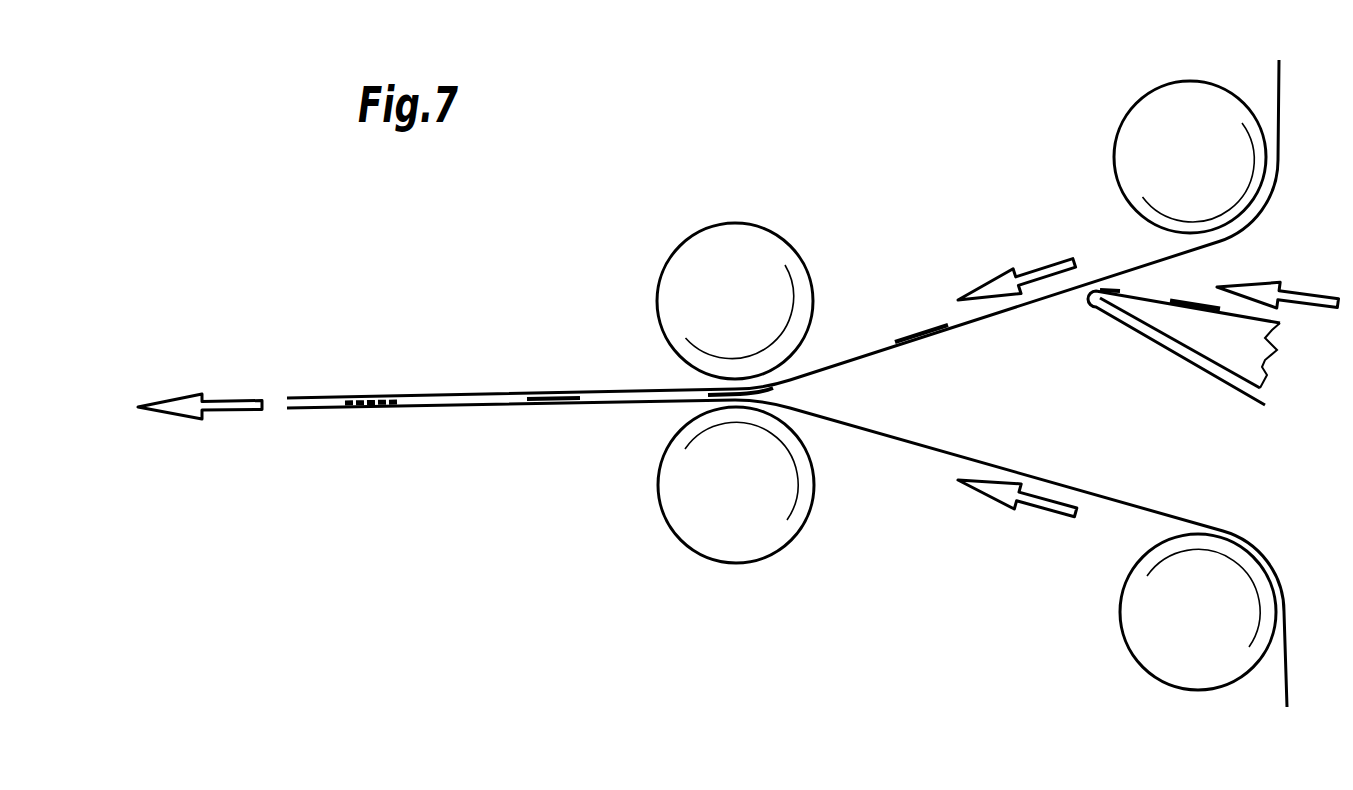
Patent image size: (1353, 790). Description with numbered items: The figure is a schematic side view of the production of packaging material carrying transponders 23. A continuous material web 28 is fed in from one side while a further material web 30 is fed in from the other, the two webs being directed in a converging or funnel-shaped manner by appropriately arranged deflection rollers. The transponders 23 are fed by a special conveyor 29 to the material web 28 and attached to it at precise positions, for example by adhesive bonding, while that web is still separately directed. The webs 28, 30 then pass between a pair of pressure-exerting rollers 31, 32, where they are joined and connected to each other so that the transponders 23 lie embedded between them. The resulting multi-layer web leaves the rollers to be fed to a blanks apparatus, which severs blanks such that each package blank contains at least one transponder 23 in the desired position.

The transponder 23 is at (373, 408).
The material web 28 is at (857, 352).
The special conveyor 29 is at (1223, 377).
The further material web 30 is at (310, 412).
The pressure-exerting roller 31 is at (687, 262).
The pressure-exerting roller 32 is at (742, 535).